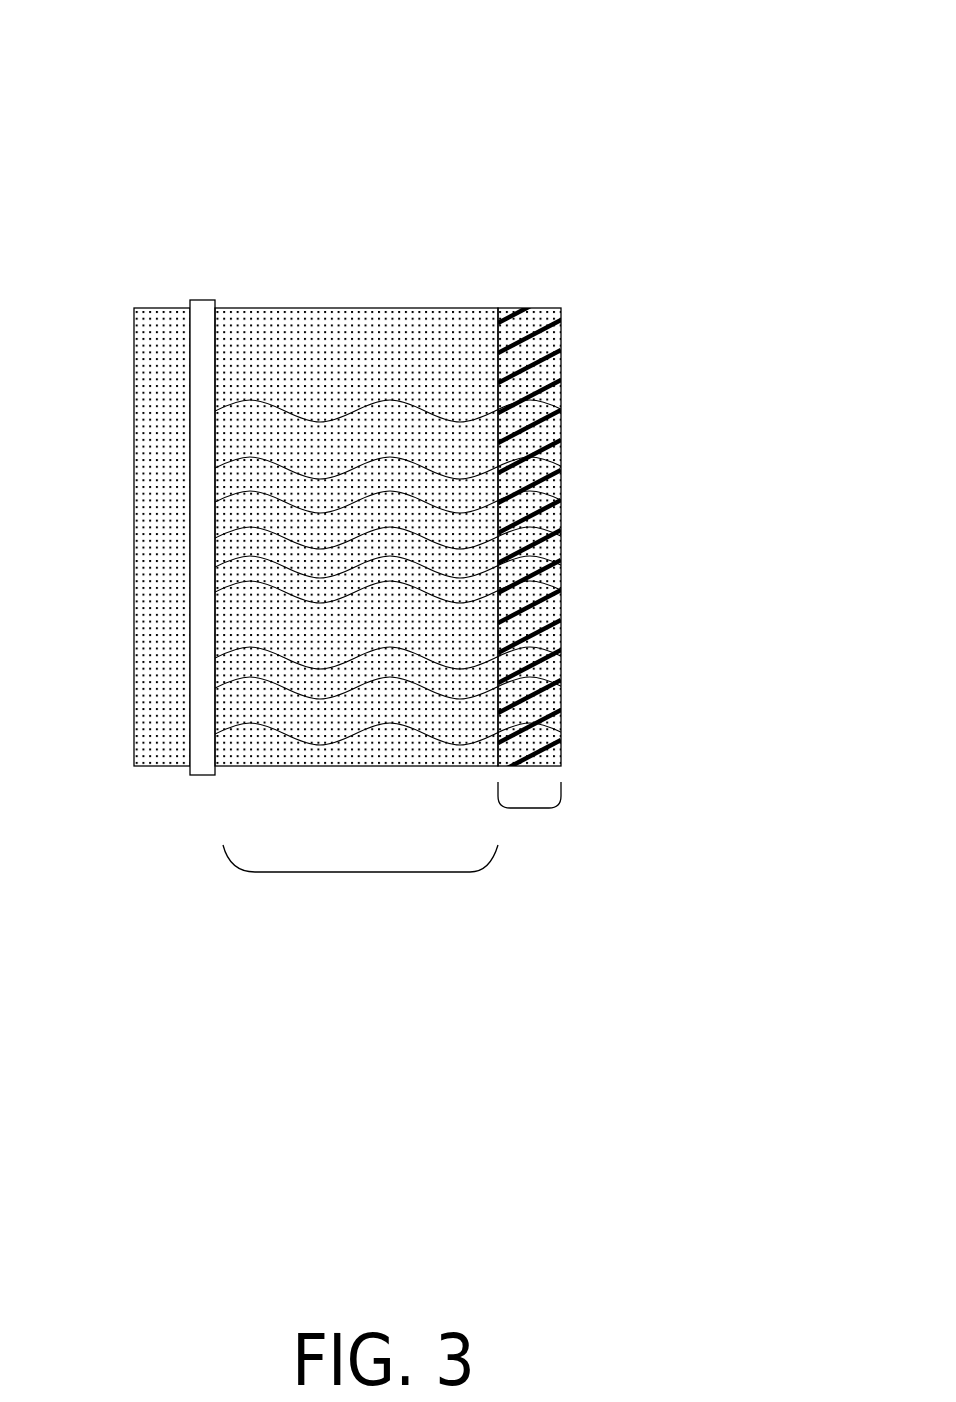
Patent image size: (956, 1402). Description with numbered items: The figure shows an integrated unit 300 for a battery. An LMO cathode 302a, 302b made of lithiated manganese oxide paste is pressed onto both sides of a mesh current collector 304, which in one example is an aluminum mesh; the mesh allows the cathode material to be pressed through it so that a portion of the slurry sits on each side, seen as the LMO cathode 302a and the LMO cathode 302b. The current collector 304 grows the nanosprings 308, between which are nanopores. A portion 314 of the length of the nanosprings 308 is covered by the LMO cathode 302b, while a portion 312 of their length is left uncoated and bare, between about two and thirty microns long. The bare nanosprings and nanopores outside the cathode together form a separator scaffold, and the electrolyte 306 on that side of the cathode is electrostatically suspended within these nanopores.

The integrated unit 300 is at (439, 466).
The LMO cathode 302a is at (159, 308).
The LMO cathode 302b is at (317, 308).
The current collector 304 is at (203, 300).
The electrolyte 306 is at (535, 338).
The nanosprings 308 is at (561, 688).
The uncoated length of nanosprings 312 is at (528, 808).
The covered length of nanosprings 314 is at (360, 872).